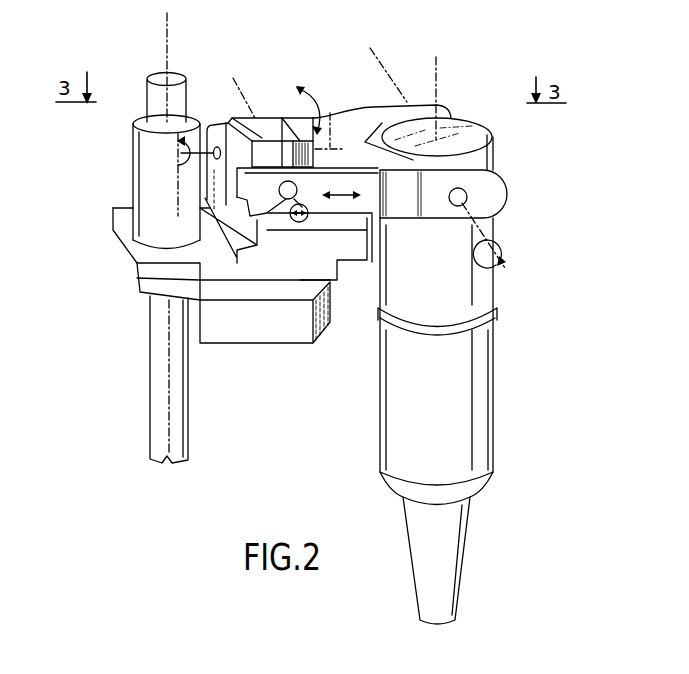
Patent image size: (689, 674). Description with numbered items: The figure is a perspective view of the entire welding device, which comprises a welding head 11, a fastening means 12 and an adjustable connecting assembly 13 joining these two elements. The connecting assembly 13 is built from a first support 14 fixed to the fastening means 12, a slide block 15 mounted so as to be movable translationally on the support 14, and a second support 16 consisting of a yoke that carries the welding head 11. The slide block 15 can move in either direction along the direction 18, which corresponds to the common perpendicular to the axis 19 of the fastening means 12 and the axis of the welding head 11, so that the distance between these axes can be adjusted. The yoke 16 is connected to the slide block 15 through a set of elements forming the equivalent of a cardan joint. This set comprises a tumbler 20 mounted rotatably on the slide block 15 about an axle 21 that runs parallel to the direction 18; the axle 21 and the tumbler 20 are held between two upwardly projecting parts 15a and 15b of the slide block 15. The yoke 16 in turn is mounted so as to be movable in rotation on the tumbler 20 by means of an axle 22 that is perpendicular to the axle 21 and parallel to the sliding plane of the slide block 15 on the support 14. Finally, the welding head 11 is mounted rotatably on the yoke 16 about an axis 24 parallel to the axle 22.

The welding head 11 is at (393, 447).
The fastening means 12 is at (173, 452).
The adjustable connecting assembly 13 is at (362, 124).
The first support 14 is at (257, 293).
The slide block 15 is at (347, 247).
The upwardly projecting part 15a is at (218, 125).
The upwardly projecting part 15b is at (289, 125).
The second support (yoke) 16 is at (360, 158).
The direction 18 is at (341, 186).
The axis 19 is at (164, 37).
The tumbler 20 is at (257, 125).
The axle 21 is at (332, 121).
The axle 22 is at (262, 212).
The axis 24 is at (470, 195).